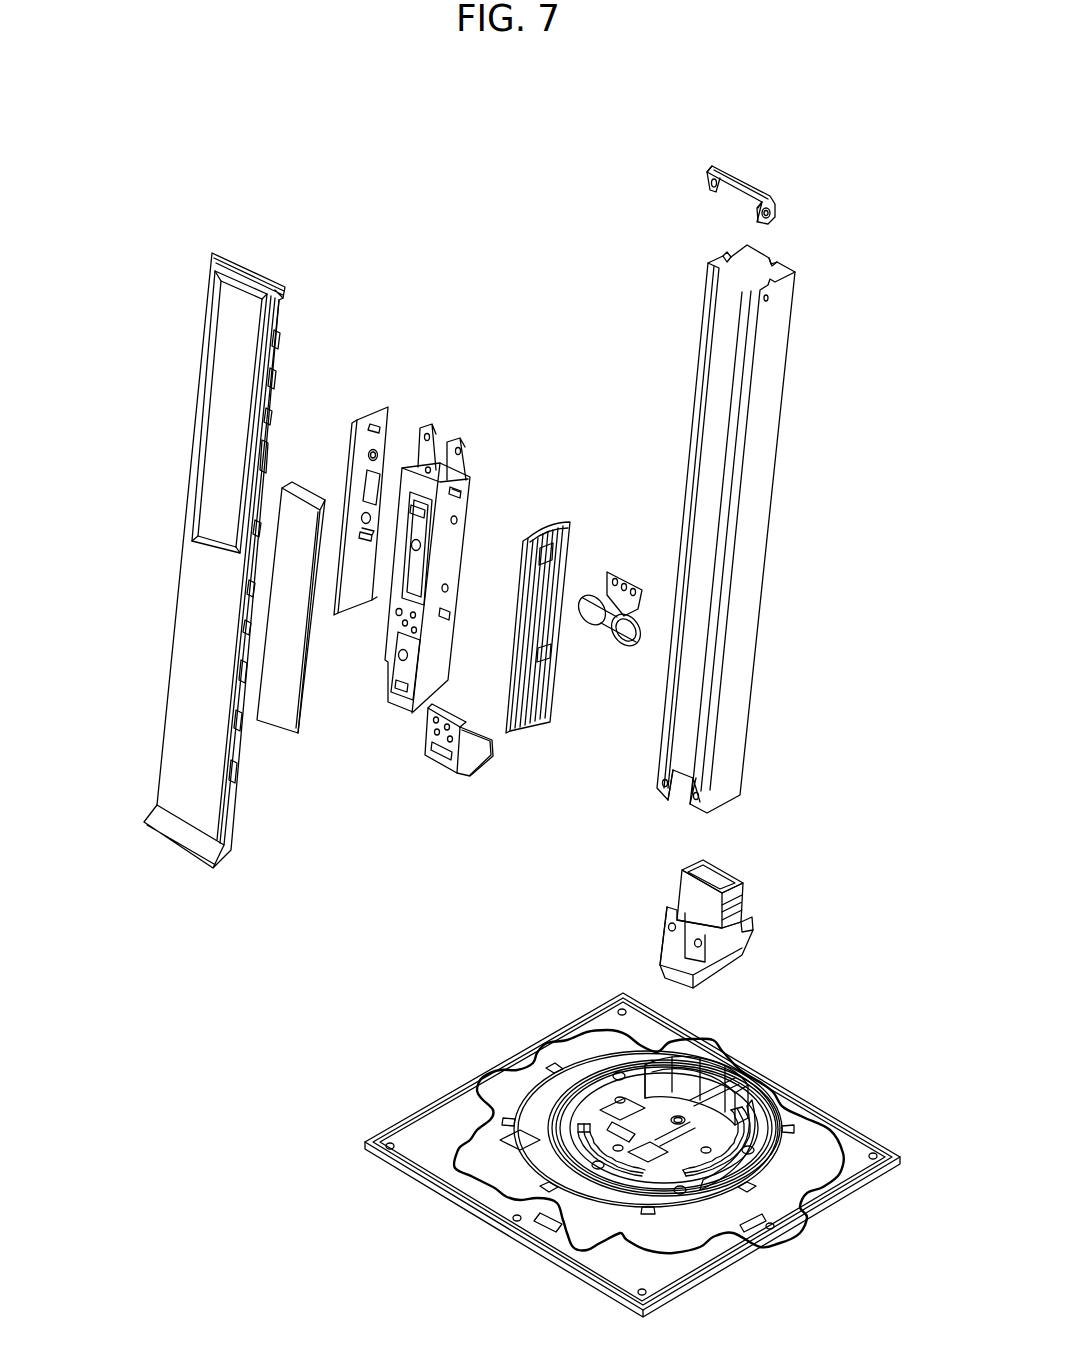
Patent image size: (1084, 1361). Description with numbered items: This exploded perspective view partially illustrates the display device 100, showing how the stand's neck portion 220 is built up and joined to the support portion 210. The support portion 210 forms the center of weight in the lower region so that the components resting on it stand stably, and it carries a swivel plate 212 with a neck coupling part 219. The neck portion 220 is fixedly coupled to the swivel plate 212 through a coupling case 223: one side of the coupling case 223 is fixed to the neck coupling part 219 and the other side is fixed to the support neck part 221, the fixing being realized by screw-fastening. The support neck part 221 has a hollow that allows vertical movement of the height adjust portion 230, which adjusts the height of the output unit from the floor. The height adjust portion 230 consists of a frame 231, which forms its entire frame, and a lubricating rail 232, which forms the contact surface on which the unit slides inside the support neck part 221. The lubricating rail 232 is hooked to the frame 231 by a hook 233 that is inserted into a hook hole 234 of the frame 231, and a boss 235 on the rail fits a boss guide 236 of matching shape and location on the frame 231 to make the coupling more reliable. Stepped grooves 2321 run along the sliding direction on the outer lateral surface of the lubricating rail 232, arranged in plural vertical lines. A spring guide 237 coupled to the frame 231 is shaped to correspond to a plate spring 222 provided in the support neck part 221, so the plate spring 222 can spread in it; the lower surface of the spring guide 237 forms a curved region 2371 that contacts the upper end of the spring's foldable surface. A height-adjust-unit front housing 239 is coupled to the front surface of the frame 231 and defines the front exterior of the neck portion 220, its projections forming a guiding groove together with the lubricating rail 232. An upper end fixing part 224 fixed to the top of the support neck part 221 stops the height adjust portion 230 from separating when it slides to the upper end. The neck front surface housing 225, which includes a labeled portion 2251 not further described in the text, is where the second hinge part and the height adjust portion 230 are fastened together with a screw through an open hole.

The display apparatus 100 is at (238, 121).
The support portion 210 is at (632, 1151).
The swivel plate 212 is at (755, 1105).
The neck coupling part 219 is at (735, 1080).
The neck portion 220 is at (812, 521).
The support neck part 221 is at (780, 408).
The plate spring 222 is at (625, 567).
The coupling case 223 is at (685, 892).
The upper end fixing part 224 is at (752, 185).
The neck front surface housing 225 is at (203, 560).
The cover opening 2251 is at (228, 430).
The height adjust portion 230 is at (386, 377).
The frame 231 is at (445, 650).
The lubricating rail 232 is at (504, 549).
The stepped grooves 2321 is at (548, 672).
The hook 233 is at (378, 420).
The hook hole 234 is at (460, 494).
The boss 235 is at (367, 455).
The boss guide 236 is at (458, 521).
The spring guide 237 is at (428, 768).
The curved region 2371 is at (478, 752).
The height-adjust-unit front housing 239 is at (292, 648).